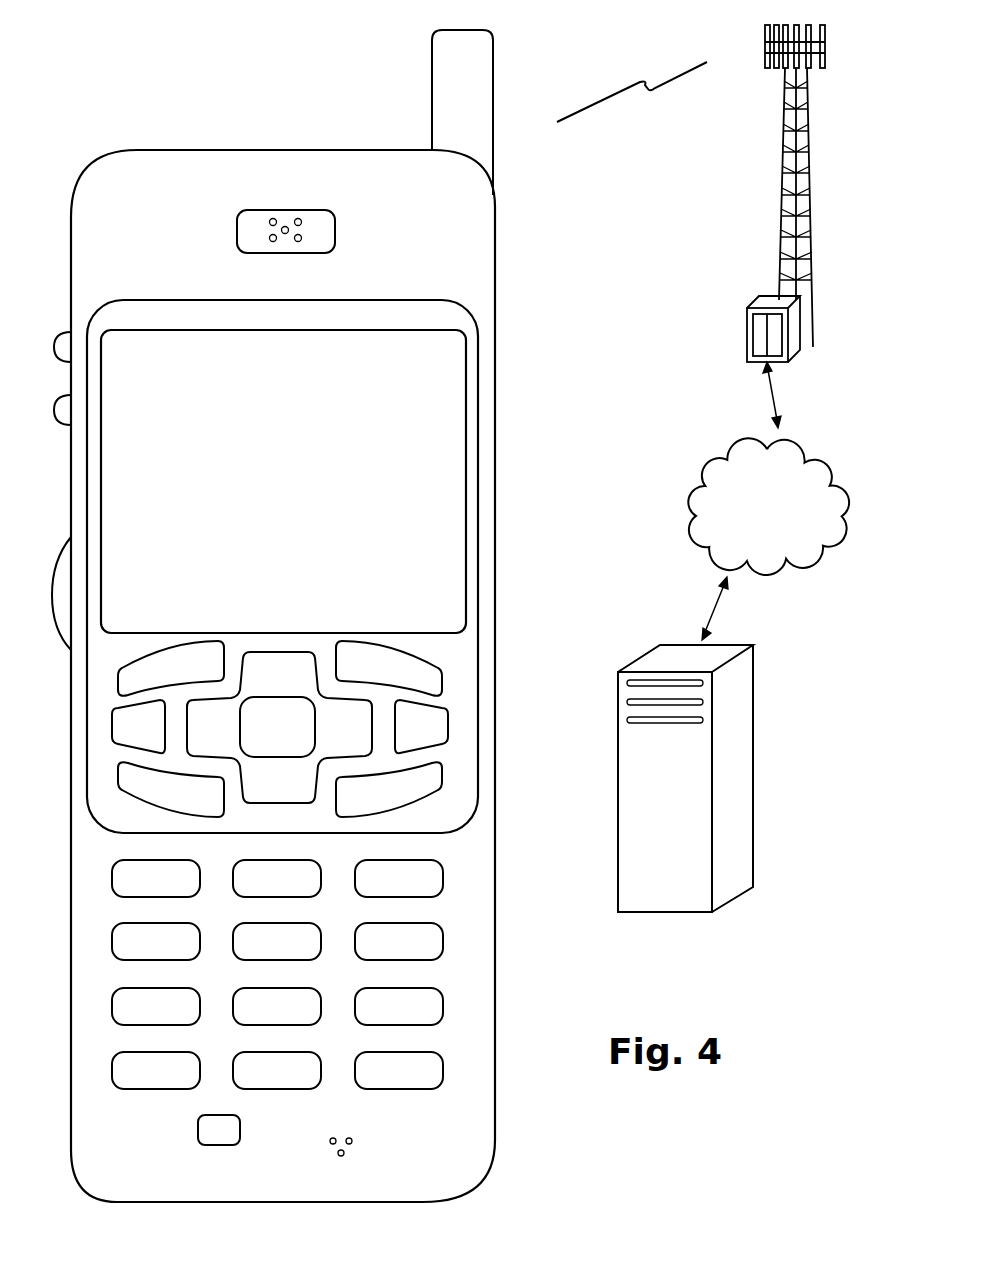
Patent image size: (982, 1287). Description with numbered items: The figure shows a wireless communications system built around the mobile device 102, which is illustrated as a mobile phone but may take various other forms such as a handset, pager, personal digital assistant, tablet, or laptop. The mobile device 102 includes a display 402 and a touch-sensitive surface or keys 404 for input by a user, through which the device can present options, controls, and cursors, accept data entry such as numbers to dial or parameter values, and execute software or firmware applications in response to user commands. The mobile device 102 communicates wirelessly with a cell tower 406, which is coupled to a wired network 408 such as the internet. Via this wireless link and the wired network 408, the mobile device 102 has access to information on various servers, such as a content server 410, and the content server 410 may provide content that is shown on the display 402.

The mobile device 102 is at (120, 1200).
The display 402 is at (478, 343).
The keys 404 is at (498, 1112).
The cell tower 406 is at (778, 208).
The wired network 408 is at (687, 557).
The content server 410 is at (663, 914).